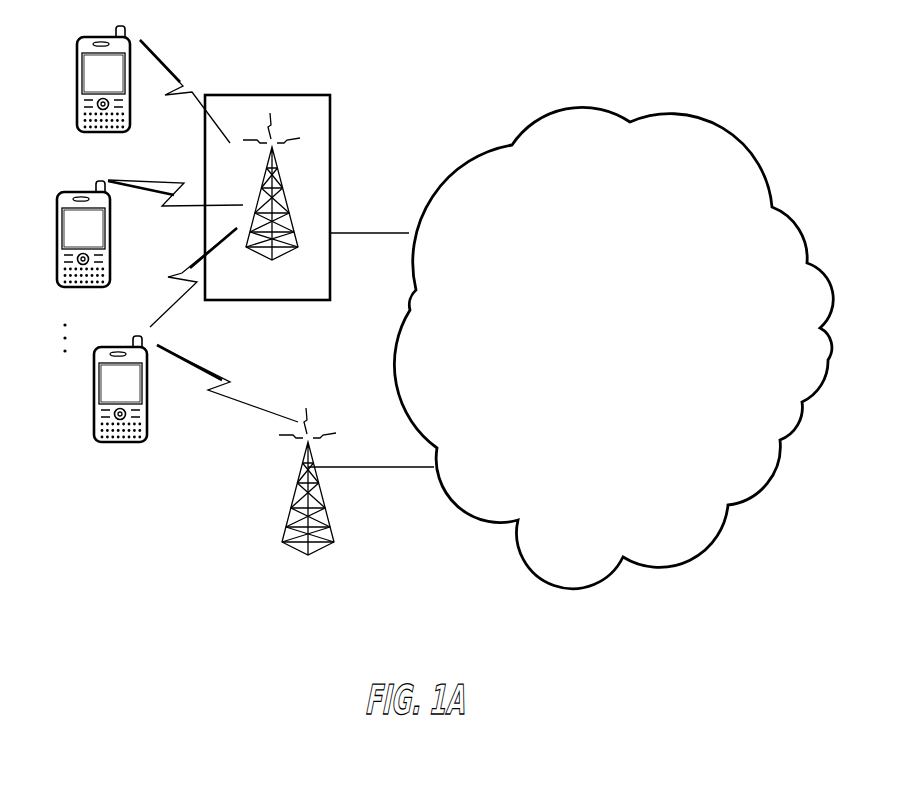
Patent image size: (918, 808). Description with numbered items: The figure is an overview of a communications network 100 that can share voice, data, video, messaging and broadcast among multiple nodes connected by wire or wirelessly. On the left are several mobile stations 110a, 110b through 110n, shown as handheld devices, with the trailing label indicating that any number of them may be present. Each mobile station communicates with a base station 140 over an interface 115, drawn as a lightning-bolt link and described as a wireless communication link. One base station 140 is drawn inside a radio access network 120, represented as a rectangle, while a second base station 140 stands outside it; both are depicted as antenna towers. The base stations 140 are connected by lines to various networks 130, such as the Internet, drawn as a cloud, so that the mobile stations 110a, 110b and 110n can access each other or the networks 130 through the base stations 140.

The communications network 100 is at (777, 56).
The mobile station 110a is at (97, 133).
The mobile station 110b is at (80, 288).
The mobile station 110n is at (110, 442).
The interface 115 is at (167, 65).
The radio access network 120 is at (295, 94).
The networks 130 is at (710, 557).
The base station 140 is at (272, 258).